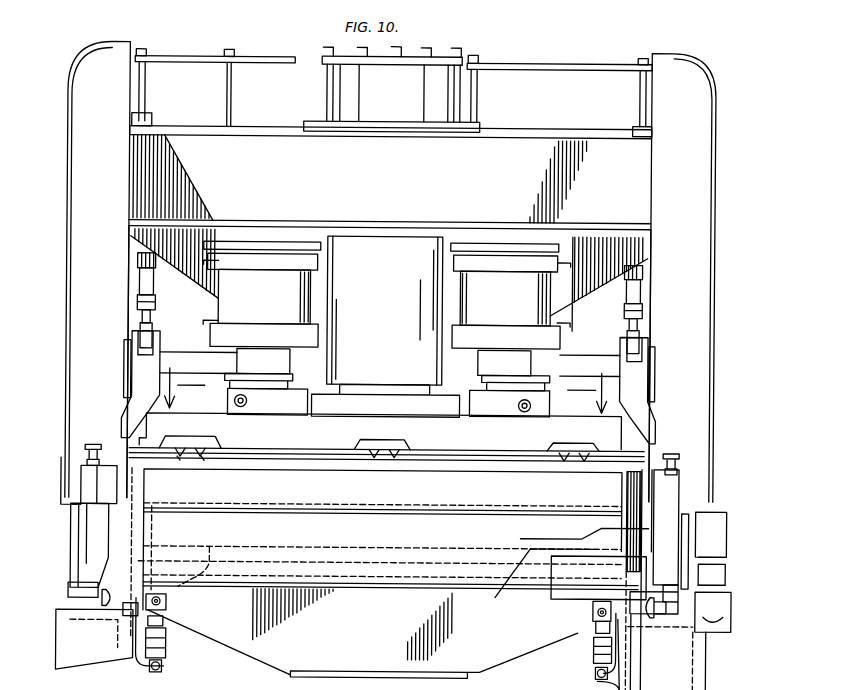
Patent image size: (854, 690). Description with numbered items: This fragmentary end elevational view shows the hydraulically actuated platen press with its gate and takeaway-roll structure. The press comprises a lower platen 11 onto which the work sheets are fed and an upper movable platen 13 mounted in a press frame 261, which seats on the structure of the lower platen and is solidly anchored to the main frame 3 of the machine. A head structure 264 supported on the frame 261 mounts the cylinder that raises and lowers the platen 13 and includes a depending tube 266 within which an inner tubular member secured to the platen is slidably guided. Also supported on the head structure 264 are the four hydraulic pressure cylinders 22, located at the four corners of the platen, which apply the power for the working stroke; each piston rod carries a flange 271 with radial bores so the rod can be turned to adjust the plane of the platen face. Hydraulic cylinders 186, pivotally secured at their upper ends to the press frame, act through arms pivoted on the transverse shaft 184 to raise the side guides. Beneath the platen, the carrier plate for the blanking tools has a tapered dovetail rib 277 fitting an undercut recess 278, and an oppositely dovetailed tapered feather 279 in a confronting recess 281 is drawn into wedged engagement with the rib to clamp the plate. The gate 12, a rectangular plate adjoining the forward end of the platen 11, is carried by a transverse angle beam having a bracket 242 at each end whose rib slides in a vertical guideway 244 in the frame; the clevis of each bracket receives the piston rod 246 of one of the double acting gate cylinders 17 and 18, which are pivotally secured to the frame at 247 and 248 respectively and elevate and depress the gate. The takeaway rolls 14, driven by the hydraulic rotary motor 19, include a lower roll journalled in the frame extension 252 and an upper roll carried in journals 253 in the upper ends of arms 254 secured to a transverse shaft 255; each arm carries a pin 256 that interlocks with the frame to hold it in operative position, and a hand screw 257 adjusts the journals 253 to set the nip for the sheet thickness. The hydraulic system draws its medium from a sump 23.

The main frame 3 is at (60, 634).
The lower platen 11 is at (390, 630).
The gate 12 is at (385, 388).
The upper movable platen 13 is at (400, 436).
The takeaway rolls 14 is at (397, 500).
The gate-actuating hydraulic cylinder 17 is at (597, 650).
The gate-actuating hydraulic cylinder 18 is at (168, 643).
The hydraulic rotary motor 19 is at (727, 626).
The hydraulic pressure cylinders 22 is at (272, 305).
The sump 23 is at (183, 70).
The transverse shaft 184 is at (196, 356).
The hydraulic cylinder 186 is at (153, 288).
The bracket 242 is at (170, 608).
The vertical guideway 244 is at (128, 618).
The piston rod 246 is at (166, 622).
The pivotal securing point 247 is at (598, 675).
The pivotal securing point 248 is at (165, 668).
The frame extension 252 is at (98, 586).
The journals 253 is at (118, 486).
The arms 254 is at (96, 526).
The transverse shaft 255 is at (508, 576).
The pin 256 is at (108, 606).
The hand screw 257 is at (95, 447).
The press frame 261 is at (74, 111).
The head structure 264 is at (405, 181).
The depending tube 266 is at (404, 305).
The flange 271 is at (236, 387).
The tapered dovetail anchoring rib 277 is at (184, 448).
The undercut recess 278 is at (179, 458).
The tapered feather 279 is at (204, 448).
The second undercut recess 281 is at (208, 458).